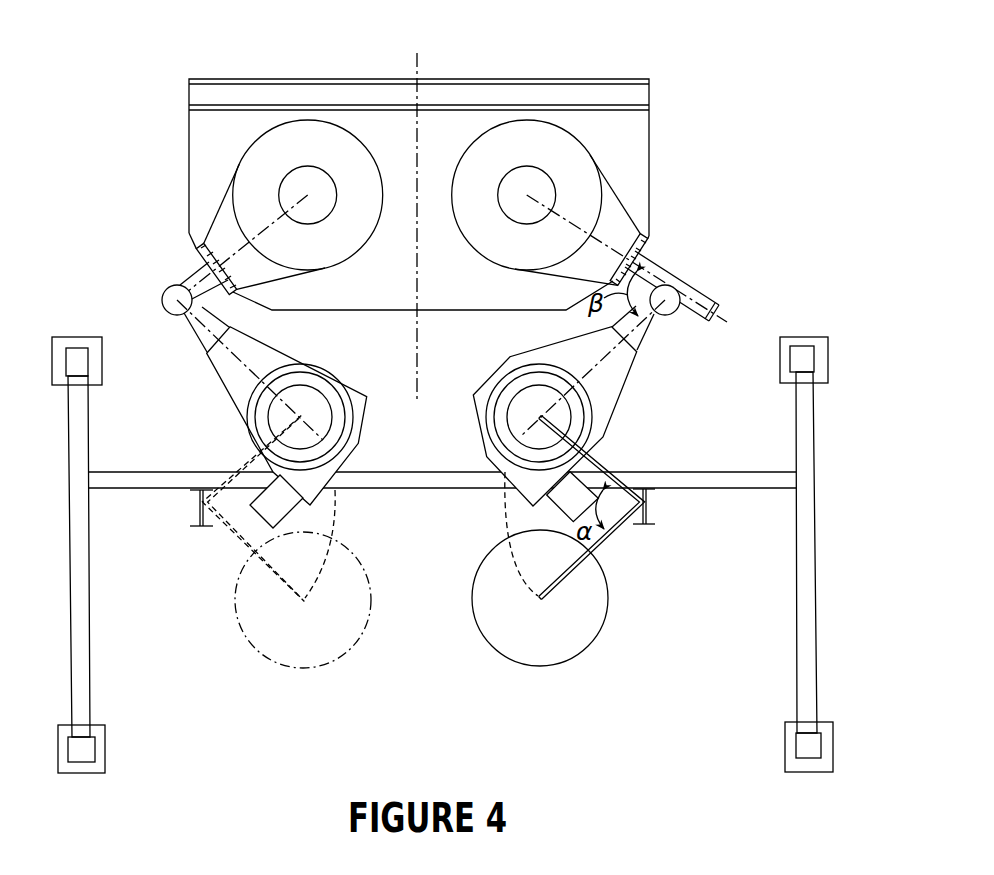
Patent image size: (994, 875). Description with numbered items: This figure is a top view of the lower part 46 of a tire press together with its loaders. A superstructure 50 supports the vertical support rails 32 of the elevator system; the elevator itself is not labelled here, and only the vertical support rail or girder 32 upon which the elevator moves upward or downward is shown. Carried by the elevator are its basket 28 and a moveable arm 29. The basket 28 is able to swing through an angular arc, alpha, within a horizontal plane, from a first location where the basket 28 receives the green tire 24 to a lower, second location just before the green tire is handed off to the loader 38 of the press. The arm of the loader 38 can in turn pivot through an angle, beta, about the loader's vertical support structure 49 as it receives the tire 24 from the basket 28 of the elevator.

The green tire 24 is at (317, 375).
The basket 28 is at (492, 648).
The moveable arm 29 is at (602, 545).
The vertical support rail 32 is at (657, 503).
The loader 38 is at (230, 376).
The lower part 46 is at (446, 134).
The vertical support structure 49 is at (677, 282).
The superstructure 50 is at (830, 540).